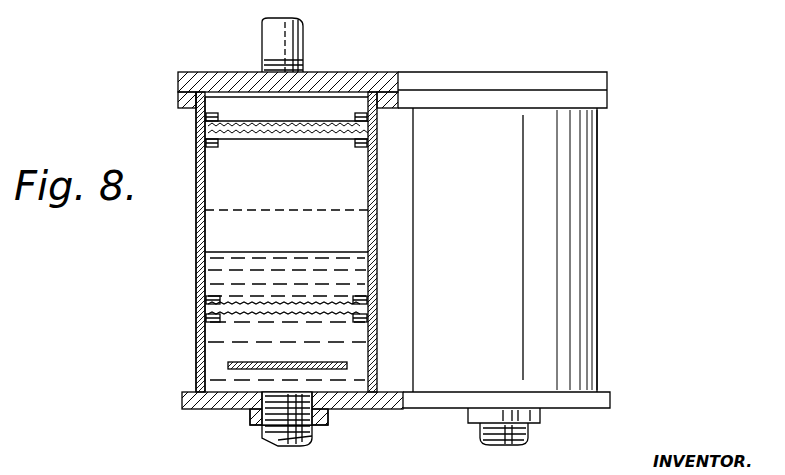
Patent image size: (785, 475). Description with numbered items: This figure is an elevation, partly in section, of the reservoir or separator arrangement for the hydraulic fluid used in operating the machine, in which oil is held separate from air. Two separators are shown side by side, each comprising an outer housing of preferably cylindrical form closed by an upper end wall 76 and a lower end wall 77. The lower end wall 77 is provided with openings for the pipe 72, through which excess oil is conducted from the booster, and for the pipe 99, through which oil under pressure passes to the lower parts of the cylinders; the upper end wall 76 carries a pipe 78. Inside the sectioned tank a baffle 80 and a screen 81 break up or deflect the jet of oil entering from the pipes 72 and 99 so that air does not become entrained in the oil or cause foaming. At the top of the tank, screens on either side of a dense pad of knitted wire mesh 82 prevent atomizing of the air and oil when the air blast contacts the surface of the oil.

The pipe 72 is at (528, 436).
The upper end wall 76 is at (192, 74).
The lower end wall 77 is at (195, 410).
The pipe 78 is at (303, 28).
The baffle 80 is at (248, 360).
The screen 81 is at (336, 310).
The dense pad of knitted wire mesh 82 is at (262, 138).
The pipe 99 is at (273, 446).